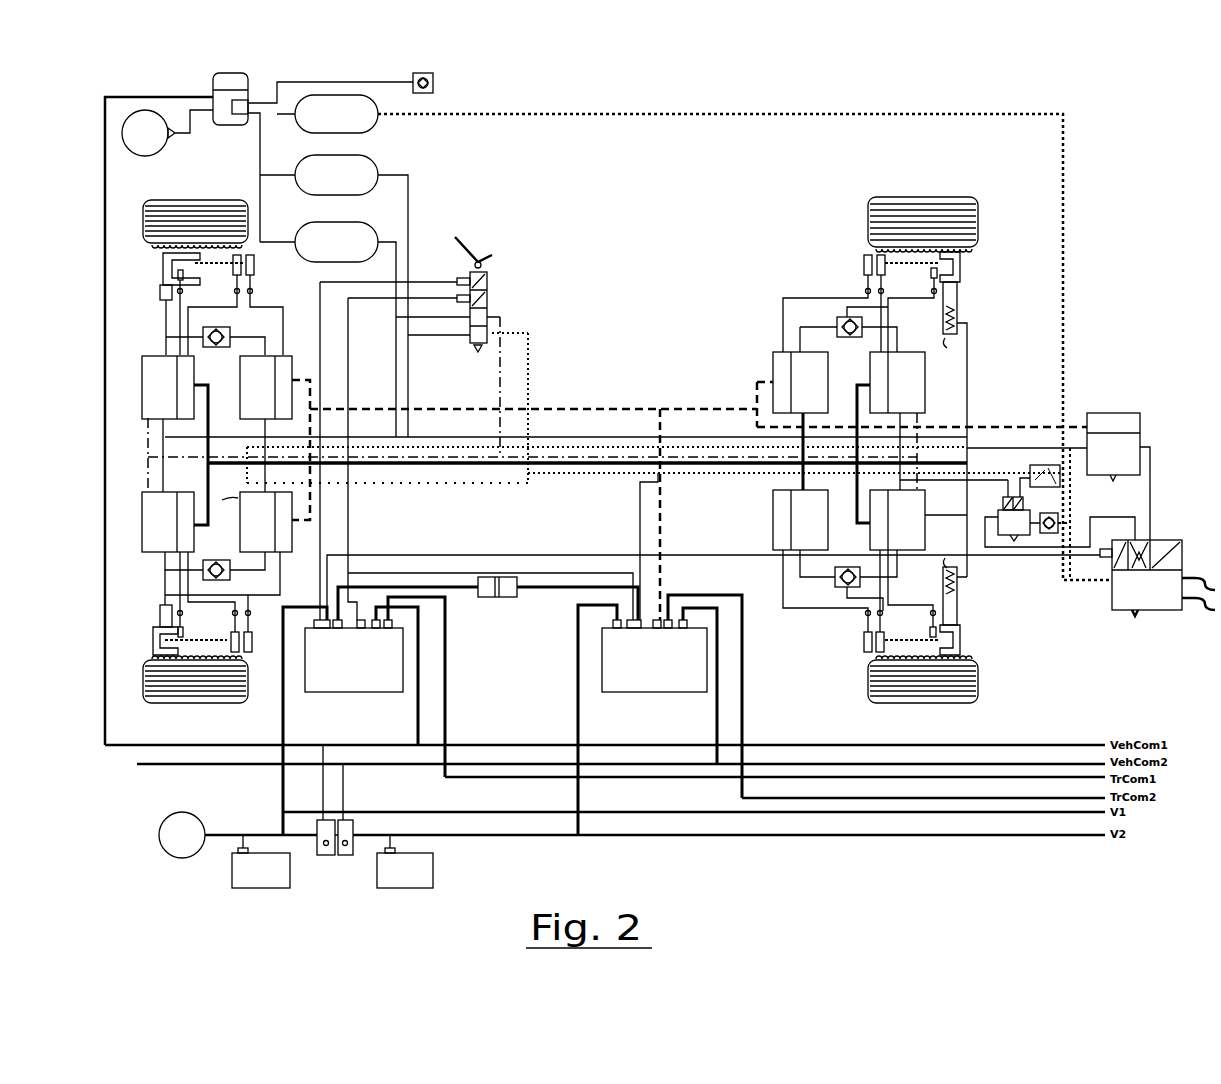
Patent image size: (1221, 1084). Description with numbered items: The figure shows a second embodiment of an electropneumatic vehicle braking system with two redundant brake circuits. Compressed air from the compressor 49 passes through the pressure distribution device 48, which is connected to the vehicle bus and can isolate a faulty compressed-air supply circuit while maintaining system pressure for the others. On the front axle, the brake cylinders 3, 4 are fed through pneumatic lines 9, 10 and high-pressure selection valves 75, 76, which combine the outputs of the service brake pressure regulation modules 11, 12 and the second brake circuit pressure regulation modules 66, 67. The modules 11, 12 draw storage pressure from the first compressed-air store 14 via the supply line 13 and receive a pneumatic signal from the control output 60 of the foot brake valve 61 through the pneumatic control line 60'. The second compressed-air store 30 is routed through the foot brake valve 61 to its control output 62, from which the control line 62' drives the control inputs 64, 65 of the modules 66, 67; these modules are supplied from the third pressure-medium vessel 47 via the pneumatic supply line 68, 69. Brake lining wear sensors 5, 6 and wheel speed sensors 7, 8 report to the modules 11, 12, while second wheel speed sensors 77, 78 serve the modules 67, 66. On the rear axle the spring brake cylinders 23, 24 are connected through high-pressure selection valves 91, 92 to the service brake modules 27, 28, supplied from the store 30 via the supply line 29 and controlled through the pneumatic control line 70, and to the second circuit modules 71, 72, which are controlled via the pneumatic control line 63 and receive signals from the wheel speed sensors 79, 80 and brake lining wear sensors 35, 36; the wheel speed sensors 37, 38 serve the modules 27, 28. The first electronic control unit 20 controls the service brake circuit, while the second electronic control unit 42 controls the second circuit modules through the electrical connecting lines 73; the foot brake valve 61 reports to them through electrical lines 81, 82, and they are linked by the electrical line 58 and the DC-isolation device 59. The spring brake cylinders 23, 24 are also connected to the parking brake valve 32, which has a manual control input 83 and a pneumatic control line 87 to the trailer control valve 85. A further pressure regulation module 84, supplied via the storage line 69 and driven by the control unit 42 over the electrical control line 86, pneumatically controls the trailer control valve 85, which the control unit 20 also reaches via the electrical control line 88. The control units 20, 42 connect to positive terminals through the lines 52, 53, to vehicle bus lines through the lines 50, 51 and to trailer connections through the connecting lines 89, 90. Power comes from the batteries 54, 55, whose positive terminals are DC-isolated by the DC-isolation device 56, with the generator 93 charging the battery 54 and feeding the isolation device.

The brake cylinder 3 is at (160, 268).
The brake cylinder 4 is at (153, 640).
The brake lining wear sensor 5 is at (184, 278).
The brake lining wear sensor 6 is at (184, 628).
The wheel speed sensor 7 is at (232, 275).
The wheel speed sensor 8 is at (230, 634).
The pneumatic line 9 is at (158, 310).
The pneumatic line 10 is at (165, 588).
The electropneumatic pressure regulation module 11 is at (140, 370).
The electropneumatic pressure regulation module 12 is at (142, 503).
The supply line 13 is at (395, 372).
The first compressed-air store 14 is at (370, 262).
The first electronic control unit 20 is at (372, 692).
The spring brake cylinder 23 is at (960, 293).
The spring brake cylinder 24 is at (960, 610).
The pressure regulation module 27 is at (915, 372).
The pressure regulation module 28 is at (915, 505).
The supply line 29 is at (410, 215).
The second compressed-air store 30 is at (372, 188).
The parking brake valve 32 is at (1025, 535).
The brake lining wear sensor 35 is at (930, 290).
The brake lining wear sensor 36 is at (930, 625).
The wheel speed sensor 37 is at (885, 272).
The wheel speed sensor 38 is at (884, 642).
The second electronic control unit 42 is at (640, 692).
The third pressure-medium vessel 47 is at (375, 125).
The pressure distribution device 48 is at (246, 80).
The compressor 49 is at (160, 145).
The line 50 is at (403, 662).
The line 51 is at (707, 652).
The line 52 is at (283, 718).
The line 53 is at (580, 700).
The battery 54 is at (283, 872).
The battery 55 is at (430, 870).
The DC-isolation device 56 is at (345, 855).
The electrical line 58 is at (460, 590).
The DC-isolation device 59 is at (505, 597).
The control output 60 is at (532, 403).
The pneumatic control line 60' is at (387, 496).
The foot brake valve 61 is at (480, 258).
The control output 62 is at (470, 377).
The control line 62' is at (655, 479).
The pneumatic control line 63 is at (575, 470).
The control input 64 is at (229, 507).
The control input 65 is at (246, 428).
The pressure regulation module 66 is at (240, 535).
The pressure regulation module 67 is at (240, 370).
The pneumatic supply line 68 is at (612, 409).
The pneumatic supply line 69 is at (700, 114).
The pneumatic control line 70 is at (628, 463).
The pressure regulation module 71 is at (800, 372).
The pressure regulation module 72 is at (800, 525).
The electrical connecting line 73 is at (662, 512).
The high-pressure selection valve 75 is at (230, 578).
The high-pressure selection valve 76 is at (228, 327).
The second wheel speed sensor 77 is at (255, 268).
The second wheel speed sensor 78 is at (252, 640).
The wheel speed sensor 79 is at (862, 262).
The wheel speed sensor 80 is at (860, 642).
The electrical line 81 is at (320, 295).
The electrical line 82 is at (348, 305).
The manual control input 83 is at (1040, 465).
The pressure regulation module 84 is at (1140, 452).
The trailer control valve 85 is at (1152, 610).
The electrical control line 86 is at (993, 427).
The pneumatic control line 87 is at (1048, 555).
The electrical control line 88 is at (430, 555).
The connecting line 89 is at (445, 665).
The connecting line 90 is at (742, 660).
The high-pressure selection valve 91 is at (838, 313).
The high-pressure selection valve 92 is at (838, 590).
The generator 93 is at (178, 858).